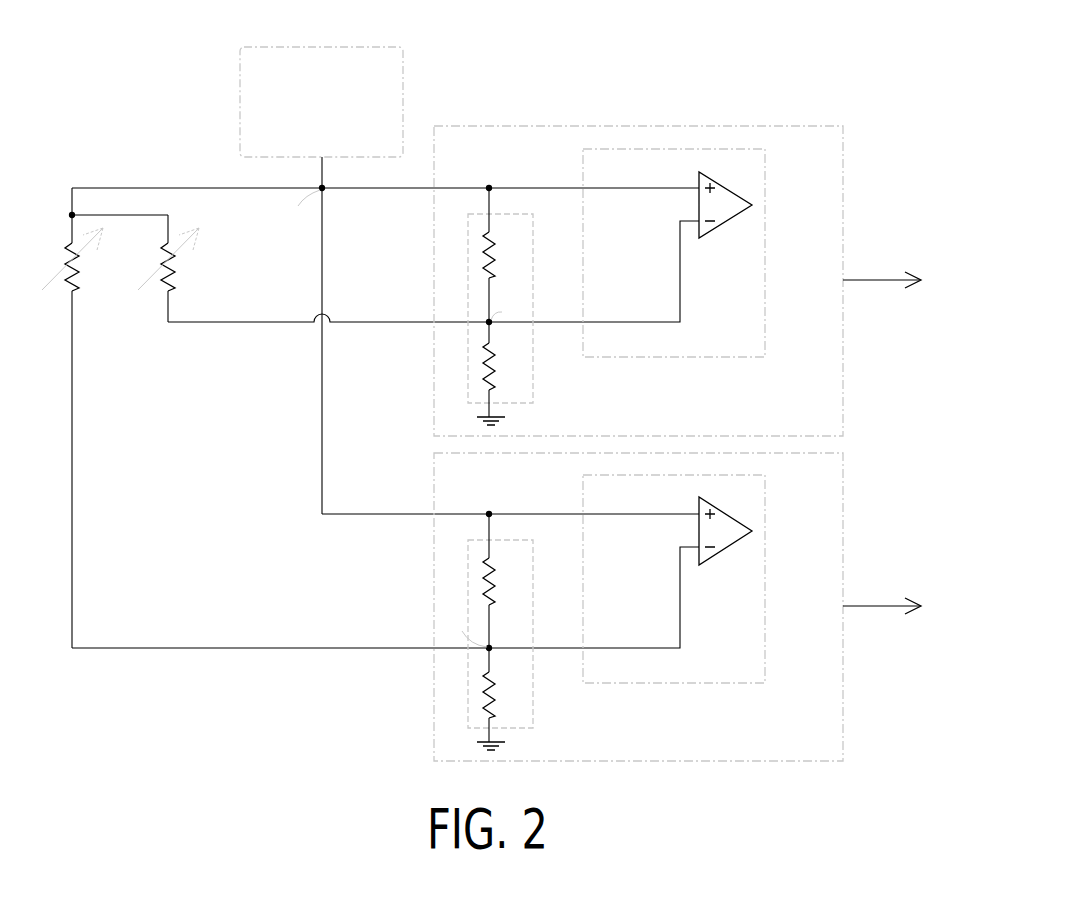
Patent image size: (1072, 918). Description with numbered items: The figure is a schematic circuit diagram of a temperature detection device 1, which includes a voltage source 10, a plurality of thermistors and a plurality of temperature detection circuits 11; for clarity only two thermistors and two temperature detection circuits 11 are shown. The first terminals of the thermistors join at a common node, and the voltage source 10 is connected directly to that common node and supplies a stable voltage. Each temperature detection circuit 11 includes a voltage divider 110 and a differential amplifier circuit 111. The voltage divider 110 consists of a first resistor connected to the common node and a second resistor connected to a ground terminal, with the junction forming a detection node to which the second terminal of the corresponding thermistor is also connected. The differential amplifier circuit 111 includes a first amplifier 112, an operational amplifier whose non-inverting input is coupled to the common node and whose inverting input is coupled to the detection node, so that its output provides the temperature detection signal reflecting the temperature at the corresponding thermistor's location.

The temperature detection device 1 is at (1050, 99).
The voltage source 10 is at (240, 102).
The temperature detection circuit 11 is at (843, 196).
The voltage divider 110 is at (534, 386).
The differential amplifier circuit 111 is at (766, 252).
The first amplifier 112 is at (726, 222).